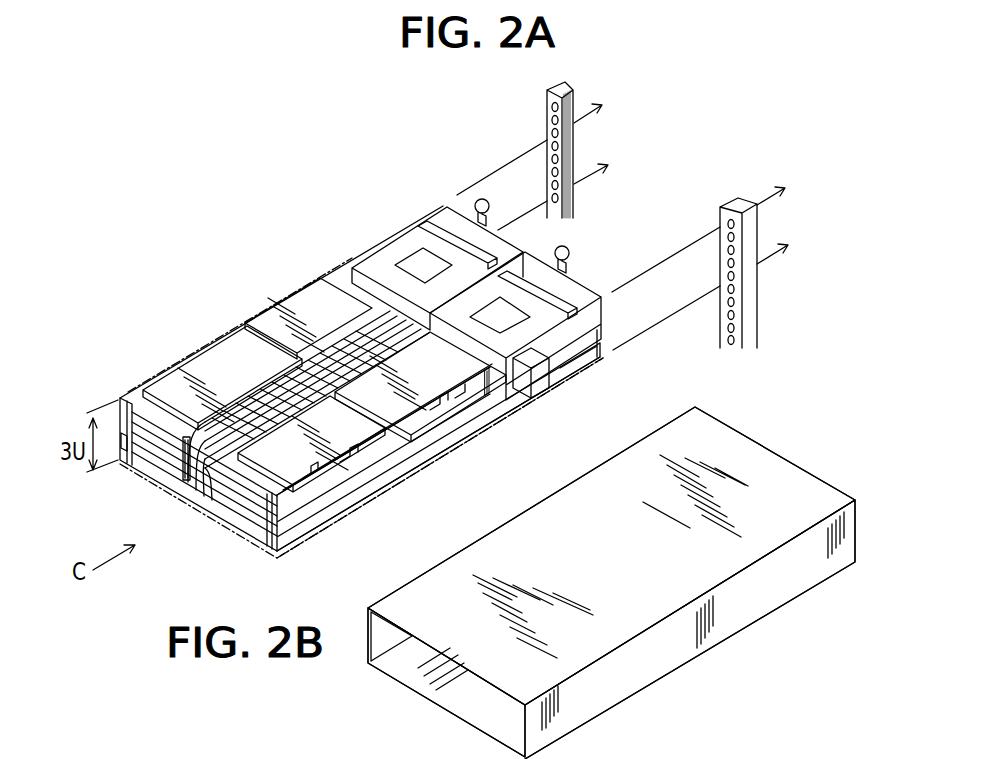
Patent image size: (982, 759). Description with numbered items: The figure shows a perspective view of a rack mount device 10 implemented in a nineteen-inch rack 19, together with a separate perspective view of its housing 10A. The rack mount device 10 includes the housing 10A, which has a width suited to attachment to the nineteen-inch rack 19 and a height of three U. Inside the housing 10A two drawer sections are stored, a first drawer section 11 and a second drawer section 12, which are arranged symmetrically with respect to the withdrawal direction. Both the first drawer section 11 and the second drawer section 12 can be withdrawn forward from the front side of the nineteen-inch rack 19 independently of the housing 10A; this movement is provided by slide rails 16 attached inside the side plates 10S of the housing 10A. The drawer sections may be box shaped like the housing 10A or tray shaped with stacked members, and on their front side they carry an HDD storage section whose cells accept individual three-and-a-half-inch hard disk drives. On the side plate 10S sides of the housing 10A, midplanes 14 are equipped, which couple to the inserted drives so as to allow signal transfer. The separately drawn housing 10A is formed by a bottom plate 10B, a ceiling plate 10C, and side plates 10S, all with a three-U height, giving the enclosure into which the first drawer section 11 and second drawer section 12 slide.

In FIG. 2A, the rack mount device 10 is at (243, 273).
In FIG. 2A, the housing 10A is at (347, 260).
In FIG. 2B, the housing 10A is at (768, 447).
In FIG. 2A, the first drawer section 11 is at (207, 343).
In FIG. 2A, the second drawer section 12 is at (463, 440).
In FIG. 2A, the midplane 14 is at (318, 487).
In FIG. 2A, the slide rail 16 is at (497, 410).
In FIG. 2A, the 19-inch rack 19 is at (753, 318).
In FIG. 2B, the bottom plate 10B is at (475, 708).
In FIG. 2B, the ceiling plate 10C is at (503, 532).
In FIG. 2B, the side plate 10S is at (743, 607).